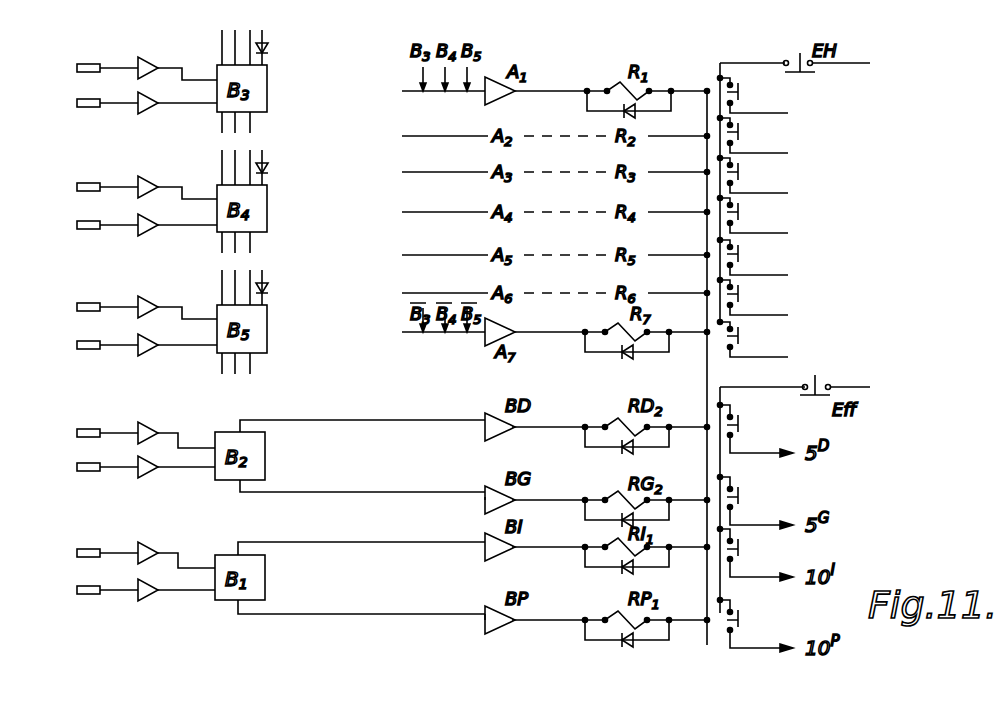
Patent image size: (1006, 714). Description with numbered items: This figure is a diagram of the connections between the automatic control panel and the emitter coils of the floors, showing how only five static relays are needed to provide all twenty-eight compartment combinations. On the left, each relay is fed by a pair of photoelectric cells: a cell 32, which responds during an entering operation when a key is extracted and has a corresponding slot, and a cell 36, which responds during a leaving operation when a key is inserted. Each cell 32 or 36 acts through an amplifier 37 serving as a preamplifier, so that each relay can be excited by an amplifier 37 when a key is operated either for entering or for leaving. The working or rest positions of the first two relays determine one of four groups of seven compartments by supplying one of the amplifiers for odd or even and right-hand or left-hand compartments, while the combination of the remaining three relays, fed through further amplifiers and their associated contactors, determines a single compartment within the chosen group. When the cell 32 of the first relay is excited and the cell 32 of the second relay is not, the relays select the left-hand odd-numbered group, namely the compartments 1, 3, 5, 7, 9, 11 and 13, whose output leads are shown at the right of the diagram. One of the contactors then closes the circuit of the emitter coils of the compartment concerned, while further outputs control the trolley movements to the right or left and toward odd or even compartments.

The photoelectric cell 32 is at (77, 68).
The photoelectric cell 36 is at (77, 103).
The amplifier 37 is at (149, 62).
The compartment 1 is at (827, 102).
The compartment 3 is at (827, 142).
The compartment 5 is at (827, 182).
The compartment 7 is at (828, 222).
The compartment 9 is at (827, 264).
The compartment 11 is at (831, 304).
The compartment 13 is at (831, 346).